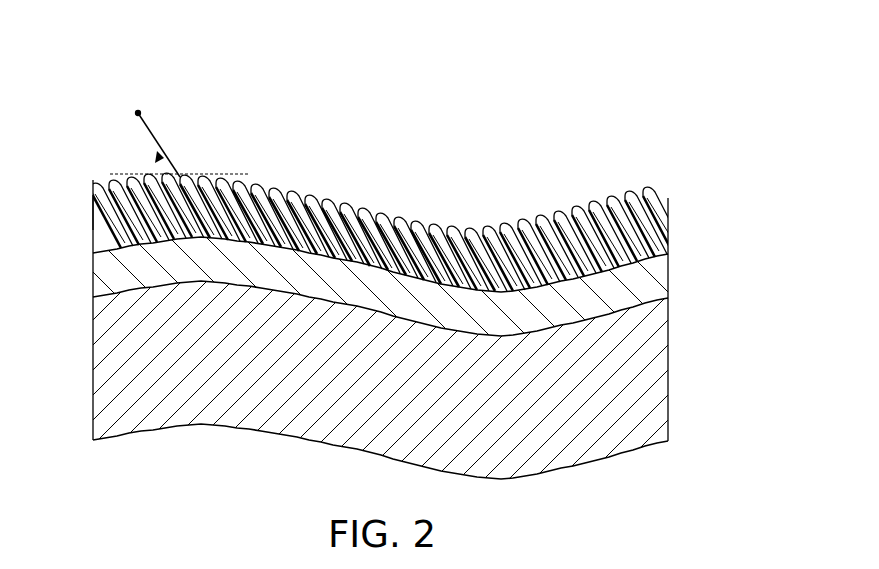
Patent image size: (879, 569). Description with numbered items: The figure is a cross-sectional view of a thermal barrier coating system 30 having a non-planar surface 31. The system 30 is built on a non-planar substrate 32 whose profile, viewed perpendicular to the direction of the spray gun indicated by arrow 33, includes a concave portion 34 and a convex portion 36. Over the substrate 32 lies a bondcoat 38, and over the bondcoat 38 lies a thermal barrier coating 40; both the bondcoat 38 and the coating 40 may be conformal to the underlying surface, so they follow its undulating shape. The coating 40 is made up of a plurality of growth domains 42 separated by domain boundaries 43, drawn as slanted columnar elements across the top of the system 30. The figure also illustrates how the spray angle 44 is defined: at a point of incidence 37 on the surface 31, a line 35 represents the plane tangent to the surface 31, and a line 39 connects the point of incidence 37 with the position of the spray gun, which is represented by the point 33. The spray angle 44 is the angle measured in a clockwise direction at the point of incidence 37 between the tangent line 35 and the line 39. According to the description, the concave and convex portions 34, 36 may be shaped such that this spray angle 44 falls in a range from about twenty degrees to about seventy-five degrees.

The thermal barrier coating system 30 is at (649, 86).
The non-planar surface 31 is at (391, 210).
The non-planar substrate 32 is at (100, 377).
The spray gun direction / spray gun position point 33 is at (141, 110).
The concave portion 34 is at (578, 210).
The tangent plane line 35 is at (247, 173).
The convex portion 36 is at (95, 178).
The point of incidence 37 is at (174, 176).
The bondcoat 38 is at (100, 270).
The line connecting point of incidence and spray gun 39 is at (150, 134).
The thermal barrier coating 40 is at (93, 212).
The growth domains 42 is at (343, 211).
The domain boundaries 43 is at (415, 222).
The spray angle 44 is at (158, 158).